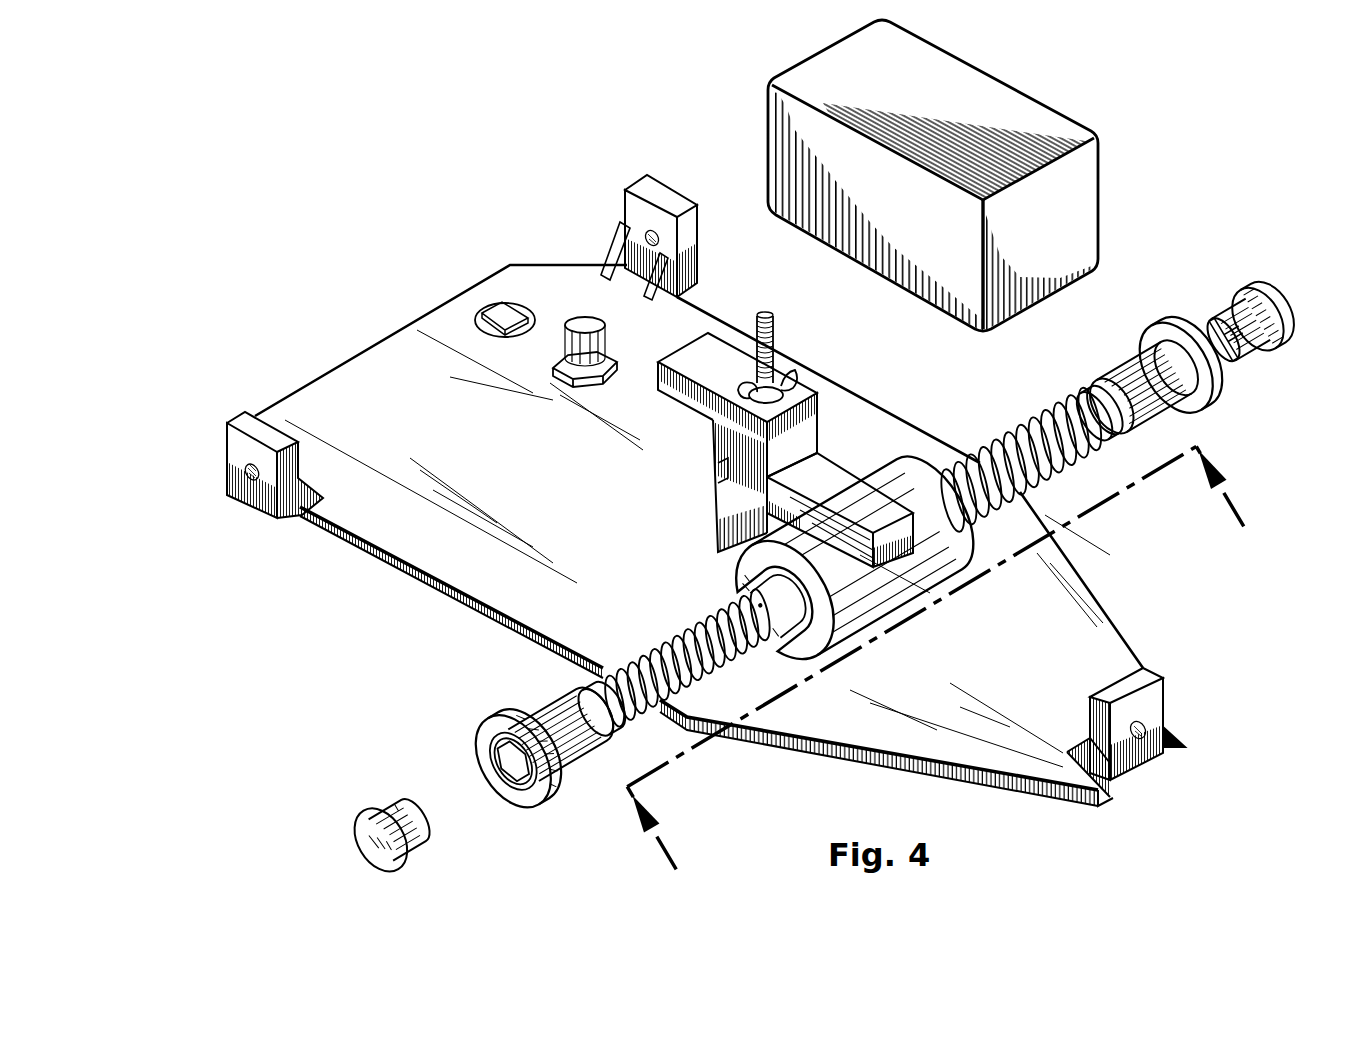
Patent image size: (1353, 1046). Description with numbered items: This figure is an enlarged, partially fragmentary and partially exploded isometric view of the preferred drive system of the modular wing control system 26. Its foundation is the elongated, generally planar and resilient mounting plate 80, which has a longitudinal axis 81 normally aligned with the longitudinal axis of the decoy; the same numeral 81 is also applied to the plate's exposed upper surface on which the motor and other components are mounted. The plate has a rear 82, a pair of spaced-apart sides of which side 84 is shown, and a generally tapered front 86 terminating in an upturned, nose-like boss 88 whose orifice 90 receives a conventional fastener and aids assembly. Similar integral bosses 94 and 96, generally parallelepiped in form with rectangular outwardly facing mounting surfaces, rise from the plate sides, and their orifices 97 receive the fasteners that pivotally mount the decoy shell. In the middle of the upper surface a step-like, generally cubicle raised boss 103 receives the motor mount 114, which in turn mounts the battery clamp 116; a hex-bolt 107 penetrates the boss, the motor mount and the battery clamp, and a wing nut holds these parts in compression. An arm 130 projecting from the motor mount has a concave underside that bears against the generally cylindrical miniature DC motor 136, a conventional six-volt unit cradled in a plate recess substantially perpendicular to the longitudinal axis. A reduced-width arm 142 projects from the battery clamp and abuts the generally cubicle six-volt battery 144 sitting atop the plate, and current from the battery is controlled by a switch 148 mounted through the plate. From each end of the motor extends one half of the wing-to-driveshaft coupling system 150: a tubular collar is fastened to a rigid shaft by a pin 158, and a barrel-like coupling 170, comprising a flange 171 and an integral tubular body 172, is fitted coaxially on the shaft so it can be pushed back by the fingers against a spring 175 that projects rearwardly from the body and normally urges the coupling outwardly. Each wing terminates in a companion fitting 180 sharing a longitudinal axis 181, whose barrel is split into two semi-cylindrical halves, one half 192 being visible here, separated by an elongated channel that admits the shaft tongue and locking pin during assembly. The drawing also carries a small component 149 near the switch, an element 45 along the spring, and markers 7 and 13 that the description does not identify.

The modular wing control system 26 is at (423, 243).
The mounting plate 80 is at (934, 752).
The longitudinal axis 81 is at (386, 335).
The rear 82 is at (317, 398).
The side 84 is at (808, 372).
The tapered front 86 is at (1108, 662).
The nose-like boss 88 is at (1185, 746).
The orifice 90 is at (1140, 736).
The boss 94 is at (280, 519).
The boss 96 is at (682, 205).
The orifices 97 is at (250, 464).
The raised boss 103 is at (723, 532).
The hex-bolt 107 is at (757, 318).
The motor mount 114 is at (718, 474).
The battery clamp 116 is at (708, 344).
The arm 130 is at (907, 538).
The DC motor 136 is at (877, 613).
The reduced-width arm 142 is at (663, 389).
The battery 144 is at (1090, 200).
The switch 148 is at (580, 318).
The recess 149 is at (483, 313).
The wing-to-driveshaft coupling system 150 is at (415, 870).
The pin 158 is at (843, 657).
The flexible cable spring 45 is at (686, 620).
The coupling 170 is at (532, 706).
The flange 171 is at (553, 798).
The tubular body 172 is at (635, 723).
The spring 175 is at (1012, 434).
The companion fitting 180 is at (347, 833).
The longitudinal axis 181 is at (1212, 331).
The barrel half 192 is at (1247, 368).
The section line 7- 7 is at (945, 673).
The view direction 13 is at (462, 795).